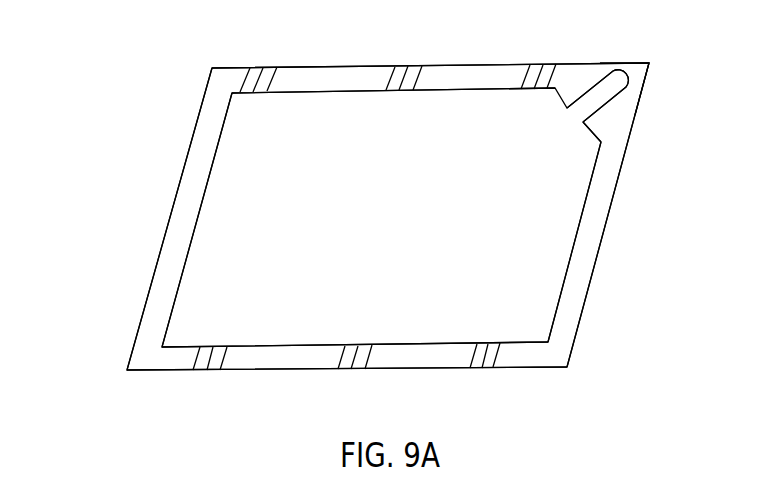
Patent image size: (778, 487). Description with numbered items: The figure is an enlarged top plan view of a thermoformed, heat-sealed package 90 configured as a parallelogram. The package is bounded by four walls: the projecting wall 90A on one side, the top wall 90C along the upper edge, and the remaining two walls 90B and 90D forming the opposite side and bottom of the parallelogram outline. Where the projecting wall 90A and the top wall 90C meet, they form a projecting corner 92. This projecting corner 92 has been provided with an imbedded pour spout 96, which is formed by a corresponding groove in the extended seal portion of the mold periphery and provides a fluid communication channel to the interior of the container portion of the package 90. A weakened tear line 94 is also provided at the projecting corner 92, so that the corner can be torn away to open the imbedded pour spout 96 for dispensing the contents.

The heat-sealed package 90 is at (125, 70).
The projecting wall 90A is at (587, 235).
The wall of package 90B is at (195, 183).
The top wall 90C is at (333, 80).
The wall of package 90D is at (290, 357).
The projecting corner 92 is at (646, 72).
The weakened tear line 94 is at (593, 77).
The imbedded pour spout 96 is at (615, 108).